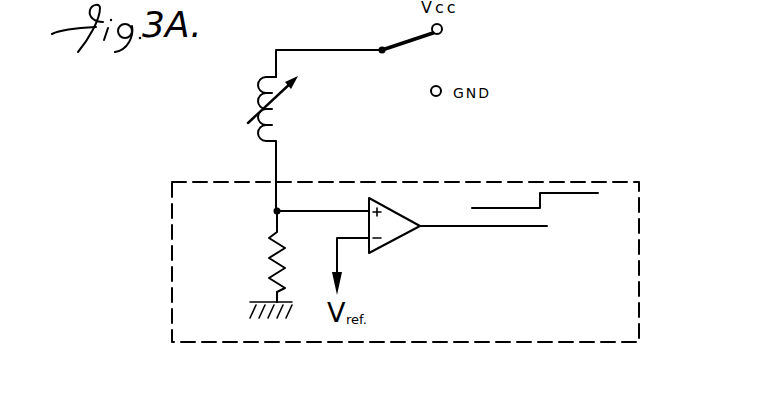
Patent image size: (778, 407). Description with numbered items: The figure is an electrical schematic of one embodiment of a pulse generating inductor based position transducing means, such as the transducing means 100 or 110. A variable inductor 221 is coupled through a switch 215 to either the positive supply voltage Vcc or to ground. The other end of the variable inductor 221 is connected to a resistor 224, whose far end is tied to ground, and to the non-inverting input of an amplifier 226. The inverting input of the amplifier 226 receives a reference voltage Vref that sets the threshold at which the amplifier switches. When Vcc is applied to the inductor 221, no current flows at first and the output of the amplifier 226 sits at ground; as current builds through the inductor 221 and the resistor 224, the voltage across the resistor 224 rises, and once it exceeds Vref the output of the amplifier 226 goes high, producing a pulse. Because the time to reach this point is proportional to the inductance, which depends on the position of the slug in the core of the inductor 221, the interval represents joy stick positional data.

The pulse generating inductor based position transducing means 100 is at (437, 262).
The pulse generating inductor based position transducing means 110 is at (639, 273).
The switch 215 is at (393, 46).
The variable inductor 221 is at (257, 83).
The resistor 224 is at (270, 237).
The amplifier 226 is at (400, 232).